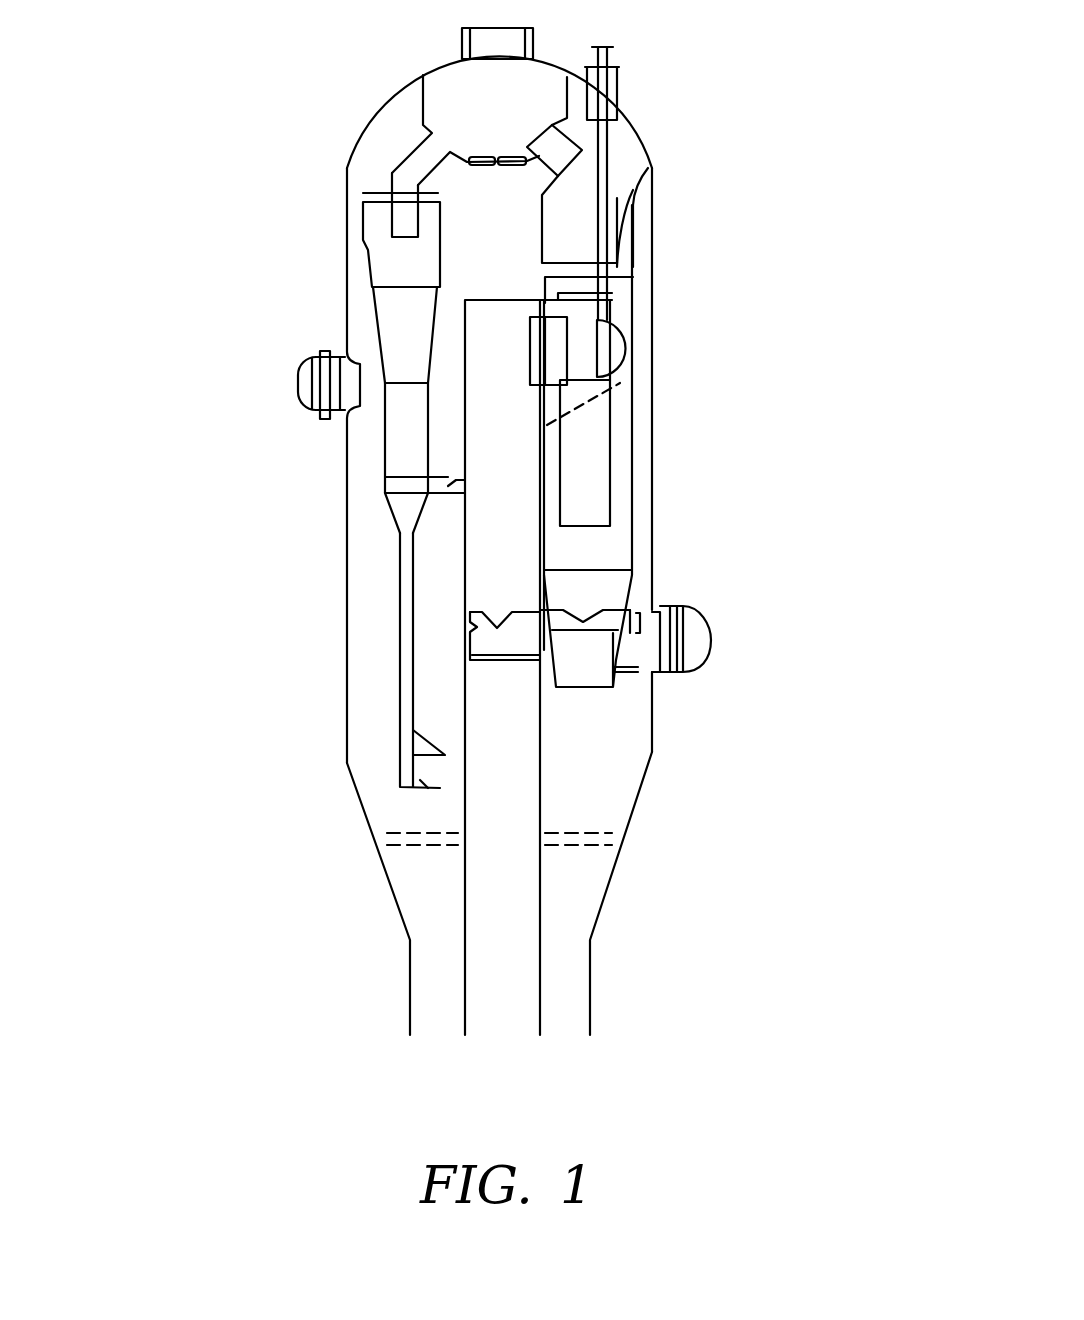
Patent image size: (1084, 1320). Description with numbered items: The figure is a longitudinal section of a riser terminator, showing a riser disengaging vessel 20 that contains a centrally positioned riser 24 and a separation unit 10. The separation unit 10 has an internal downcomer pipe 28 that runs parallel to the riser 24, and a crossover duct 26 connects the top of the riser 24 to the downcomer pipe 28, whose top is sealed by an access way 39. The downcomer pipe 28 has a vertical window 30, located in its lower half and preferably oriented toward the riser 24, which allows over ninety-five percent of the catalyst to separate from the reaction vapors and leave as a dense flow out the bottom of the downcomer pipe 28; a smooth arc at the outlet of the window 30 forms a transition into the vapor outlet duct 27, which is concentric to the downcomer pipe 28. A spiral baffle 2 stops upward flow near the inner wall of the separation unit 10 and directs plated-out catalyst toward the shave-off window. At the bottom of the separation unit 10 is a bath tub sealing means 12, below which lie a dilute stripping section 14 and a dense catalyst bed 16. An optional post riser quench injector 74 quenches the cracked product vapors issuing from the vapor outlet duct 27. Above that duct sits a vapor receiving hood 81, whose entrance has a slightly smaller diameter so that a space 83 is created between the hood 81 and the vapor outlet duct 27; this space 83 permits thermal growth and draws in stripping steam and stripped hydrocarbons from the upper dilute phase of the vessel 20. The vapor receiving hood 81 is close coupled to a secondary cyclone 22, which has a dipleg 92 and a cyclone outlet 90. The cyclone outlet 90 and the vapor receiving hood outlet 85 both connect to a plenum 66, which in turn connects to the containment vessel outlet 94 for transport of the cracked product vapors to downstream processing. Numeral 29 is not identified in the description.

The spiral baffle 2 is at (622, 383).
The separation unit 10 is at (598, 475).
The bath tub sealing means 12 is at (603, 677).
The dilute stripping section 14 is at (612, 727).
The dense catalyst bed 16 is at (570, 895).
The riser disengaging vessel 20 is at (347, 572).
The secondary cyclone 22 is at (398, 255).
The riser 24 is at (513, 763).
The crossover duct 26 is at (610, 313).
The vapor outlet duct 27 is at (622, 442).
The downcomer pipe 28 is at (630, 403).
The housing 29 is at (560, 327).
The vertical window 30 is at (552, 495).
The access way 39 is at (633, 267).
The plenum 66 is at (437, 106).
The post riser quench injector 74 is at (612, 86).
The vapor receiving hood 81 is at (617, 195).
The space 83 is at (636, 200).
The vapor receiving hood outlet 85 is at (580, 150).
The cyclone outlet 90 is at (410, 167).
The dipleg 92 is at (408, 680).
The containment vessel outlet 94 is at (482, 40).